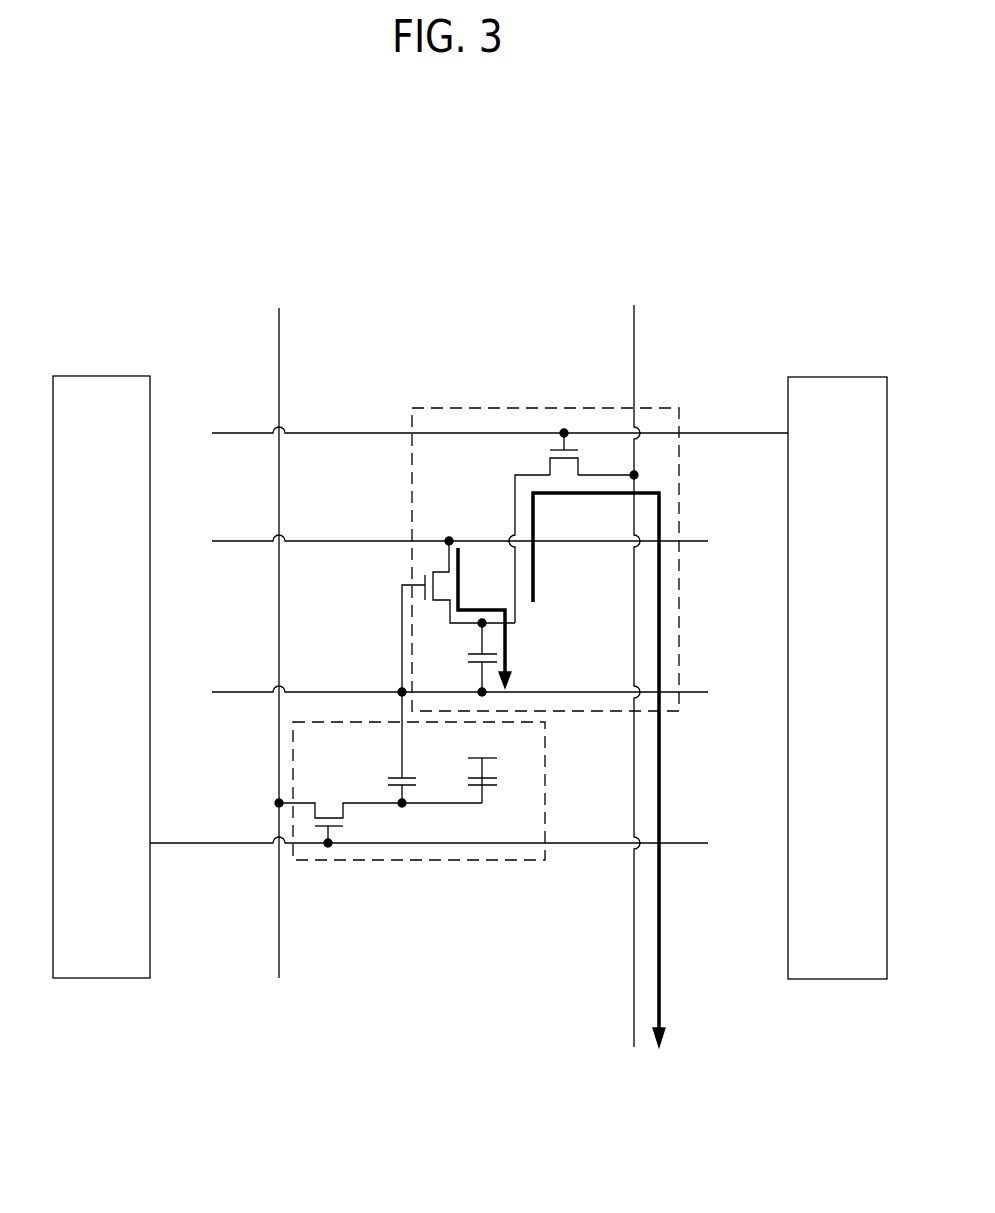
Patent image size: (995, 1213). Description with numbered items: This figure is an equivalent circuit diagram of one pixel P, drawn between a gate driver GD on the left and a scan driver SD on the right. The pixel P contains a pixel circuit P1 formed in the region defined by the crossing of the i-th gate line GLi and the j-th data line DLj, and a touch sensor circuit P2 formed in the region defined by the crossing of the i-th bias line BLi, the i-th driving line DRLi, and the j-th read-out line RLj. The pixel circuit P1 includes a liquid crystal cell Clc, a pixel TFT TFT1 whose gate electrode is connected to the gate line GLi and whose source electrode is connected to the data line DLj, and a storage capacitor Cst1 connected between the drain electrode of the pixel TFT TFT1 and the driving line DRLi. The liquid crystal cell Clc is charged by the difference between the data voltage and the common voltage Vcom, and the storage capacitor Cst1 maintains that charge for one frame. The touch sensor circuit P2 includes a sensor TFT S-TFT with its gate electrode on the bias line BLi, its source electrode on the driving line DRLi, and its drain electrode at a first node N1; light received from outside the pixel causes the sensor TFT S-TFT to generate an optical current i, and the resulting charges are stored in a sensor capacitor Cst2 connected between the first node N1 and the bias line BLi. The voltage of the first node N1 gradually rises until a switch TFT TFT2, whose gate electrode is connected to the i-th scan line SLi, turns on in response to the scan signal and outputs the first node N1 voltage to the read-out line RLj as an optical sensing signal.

The pixel P is at (206, 343).
The gate driver GD is at (103, 978).
The scan driver SD is at (838, 979).
The j-th data line DLj is at (304, 643).
The j-th read-out line RLj is at (612, 676).
The i-th scan line SLi is at (500, 420).
The i-th driving line DRLi is at (460, 527).
The i-th bias line BLi is at (460, 679).
The i-th gate line GLi is at (429, 830).
The pixel circuit P1 is at (460, 860).
The touch sensor circuit P2 is at (679, 470).
The pixel TFT TFT1 is at (378, 821).
The switch TFT TFT2 is at (563, 528).
The sensor TFT S-TFT is at (427, 616).
The first node N1 is at (484, 618).
The optical current i is at (591, 770).
The storage capacitor Cst1 is at (378, 749).
The sensor capacitor Cst2 is at (514, 655).
The liquid crystal cell Clc is at (501, 780).
The common voltage Vcom is at (481, 745).